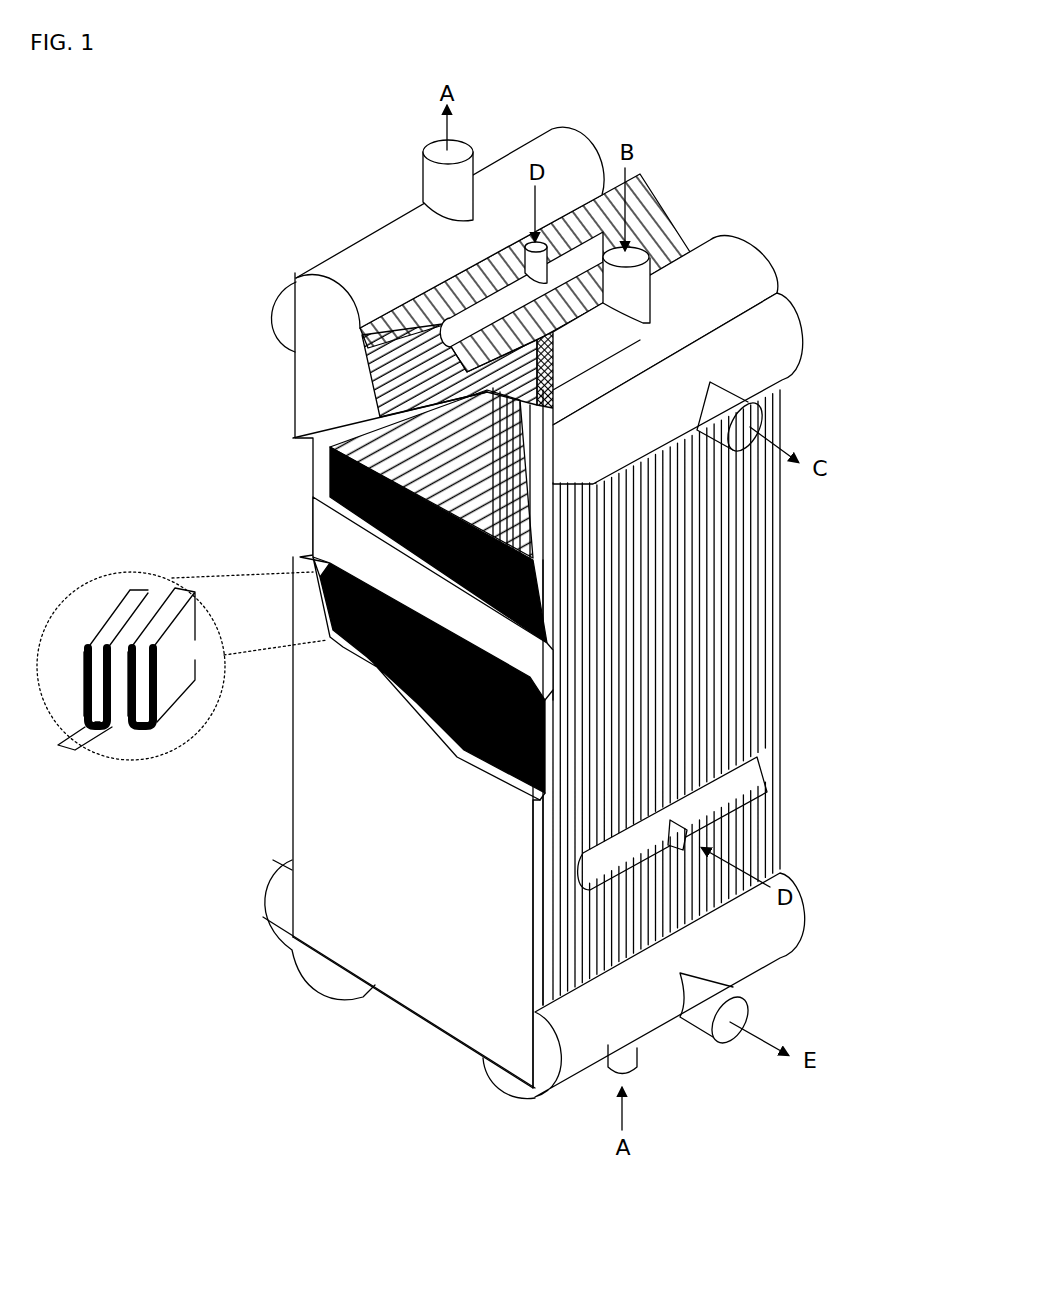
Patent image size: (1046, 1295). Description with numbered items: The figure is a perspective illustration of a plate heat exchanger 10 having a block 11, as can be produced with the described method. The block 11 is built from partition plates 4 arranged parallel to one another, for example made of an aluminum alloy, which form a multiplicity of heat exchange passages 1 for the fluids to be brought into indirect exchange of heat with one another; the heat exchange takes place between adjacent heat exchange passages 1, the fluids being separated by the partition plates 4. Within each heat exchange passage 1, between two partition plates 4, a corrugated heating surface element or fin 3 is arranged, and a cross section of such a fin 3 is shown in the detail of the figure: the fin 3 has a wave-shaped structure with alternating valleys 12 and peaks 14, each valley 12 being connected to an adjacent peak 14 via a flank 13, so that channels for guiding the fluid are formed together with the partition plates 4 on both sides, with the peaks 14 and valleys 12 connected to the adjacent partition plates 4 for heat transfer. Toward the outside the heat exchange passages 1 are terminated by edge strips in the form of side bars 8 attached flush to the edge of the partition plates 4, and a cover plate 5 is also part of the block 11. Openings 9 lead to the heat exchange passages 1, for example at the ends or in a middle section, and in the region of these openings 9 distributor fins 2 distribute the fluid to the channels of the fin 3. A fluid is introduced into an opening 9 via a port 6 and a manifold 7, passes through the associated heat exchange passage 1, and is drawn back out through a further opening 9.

The heat exchange passage 1 is at (435, 619).
The distributor fin 2 is at (330, 440).
The heating surface element or fin 3 is at (347, 543).
The partition plate 4 is at (328, 563).
The cover plate 5 is at (318, 745).
The port 6 is at (435, 178).
The manifold 7 is at (360, 282).
The edge strip (side bar) 8 is at (540, 770).
The opening 9 is at (437, 385).
The plate heat exchanger 10 is at (810, 610).
The block 11 is at (430, 930).
The valley 12 is at (120, 728).
The flank 13 is at (118, 683).
The peak 14 is at (97, 644).